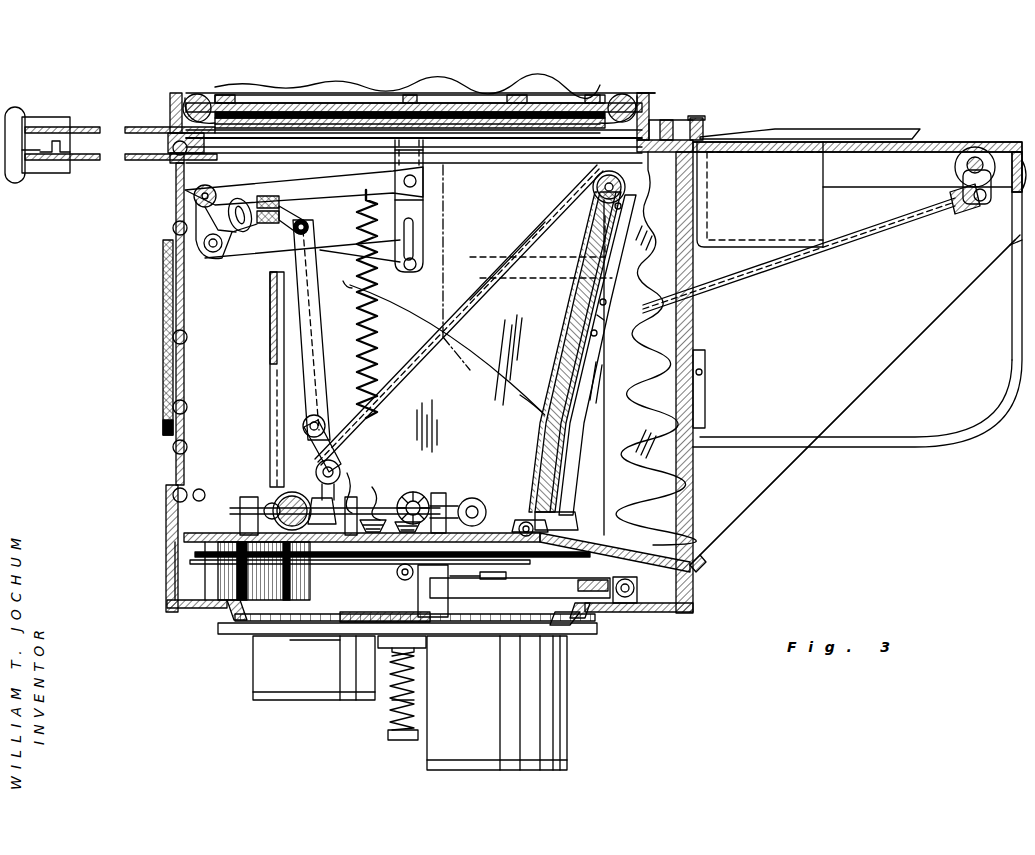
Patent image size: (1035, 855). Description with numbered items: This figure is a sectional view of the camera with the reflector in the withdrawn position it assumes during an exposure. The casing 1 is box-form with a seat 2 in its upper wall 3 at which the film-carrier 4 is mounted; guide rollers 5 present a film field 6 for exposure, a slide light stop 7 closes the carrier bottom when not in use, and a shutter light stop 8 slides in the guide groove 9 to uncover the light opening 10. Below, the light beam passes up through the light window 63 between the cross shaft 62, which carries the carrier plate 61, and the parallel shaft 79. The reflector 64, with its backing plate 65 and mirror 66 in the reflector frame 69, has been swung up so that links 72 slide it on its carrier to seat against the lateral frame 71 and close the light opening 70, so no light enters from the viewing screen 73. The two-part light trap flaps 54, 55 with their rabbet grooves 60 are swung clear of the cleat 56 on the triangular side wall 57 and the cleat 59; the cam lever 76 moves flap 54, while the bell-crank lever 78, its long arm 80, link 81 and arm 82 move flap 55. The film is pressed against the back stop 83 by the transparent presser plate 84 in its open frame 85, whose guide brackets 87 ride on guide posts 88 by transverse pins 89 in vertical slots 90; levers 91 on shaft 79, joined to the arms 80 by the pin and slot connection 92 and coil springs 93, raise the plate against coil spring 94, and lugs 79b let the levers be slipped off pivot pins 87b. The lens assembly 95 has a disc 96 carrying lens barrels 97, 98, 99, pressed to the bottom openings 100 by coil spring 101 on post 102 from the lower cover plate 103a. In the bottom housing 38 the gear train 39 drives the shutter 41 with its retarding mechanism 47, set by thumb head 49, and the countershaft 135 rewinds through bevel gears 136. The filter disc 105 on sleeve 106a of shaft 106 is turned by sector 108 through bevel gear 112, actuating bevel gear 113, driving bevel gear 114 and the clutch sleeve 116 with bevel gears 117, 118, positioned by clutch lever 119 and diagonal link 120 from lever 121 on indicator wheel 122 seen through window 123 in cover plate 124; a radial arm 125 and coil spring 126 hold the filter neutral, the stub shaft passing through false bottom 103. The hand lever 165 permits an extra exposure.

The casing 1 is at (175, 178).
The seat 2 is at (495, 153).
The upper wall 3 is at (672, 112).
The film-carrier 4 is at (652, 95).
The guide rollers 5 is at (198, 94).
The film field 6 is at (292, 118).
The slide light stop 7 is at (142, 125).
The shutter light stop 8 is at (128, 162).
The guide groove 9 is at (338, 192).
The light opening 10 is at (196, 194).
The bottom housing 38 is at (166, 576).
The gear train 39 is at (520, 520).
The shutter 41 is at (330, 567).
The retarding mechanism 47 is at (562, 597).
The thumb head 49 is at (705, 124).
The flap 54 is at (574, 308).
The flap 55 is at (275, 378).
The cleat 56 is at (536, 246).
The side wall 57 is at (438, 430).
The cleat 59 is at (412, 398).
The rabbet grooves 60 is at (352, 286).
The carrier plate 61 is at (540, 438).
The cross shaft 62 is at (628, 186).
The light window 63 is at (478, 165).
The reflector 64 is at (597, 332).
The backing plate 65 is at (604, 302).
The mirror 66 is at (602, 318).
The reflector frame 69 is at (622, 206).
The light opening 70 is at (572, 425).
The lateral frame 71 is at (626, 199).
The link 72 is at (585, 365).
The viewing screen 73 is at (676, 450).
The cam lever 76 is at (640, 236).
The lever 78 is at (224, 262).
The shaft 79 is at (228, 213).
The lugs 79b is at (200, 236).
The long arm 80 is at (292, 236).
The link 81 is at (320, 346).
The arm 82 is at (322, 472).
The back stop 83 is at (382, 100).
The presser plate 84 is at (500, 105).
The open frame 85 is at (590, 122).
The guide brackets 87 is at (420, 212).
The pivot pins 87b is at (421, 180).
The guide posts 88 is at (422, 196).
The transverse pins 89 is at (410, 272).
The vertical slots 90 is at (416, 230).
The levers 91 is at (343, 214).
The pin and slot connection 92 is at (215, 254).
The coil springs 93 is at (284, 212).
The coil spring 94 is at (380, 340).
The lens assembly 95 is at (288, 642).
The disc 96 is at (580, 622).
The lens barrel 97 is at (392, 702).
The lens barrel 98 is at (312, 680).
The lens barrel 99 is at (542, 722).
The bottom openings 100 is at (220, 634).
The coil spring 101 is at (390, 738).
The post 102 is at (392, 720).
The false bottom 103 is at (200, 534).
The lower cover plate 103a is at (205, 608).
The filter disc 105 is at (210, 562).
The shaft 106 is at (414, 596).
The sleeve 106a is at (440, 622).
The sector 108 is at (328, 560).
The bevel gear 112 is at (390, 512).
The actuating bevel gear 113 is at (368, 510).
The driving bevel gear 114 is at (322, 500).
The clutch sleeve 116 is at (274, 502).
The bevel gear 117 is at (246, 521).
The bevel gear 118 is at (298, 497).
The clutch lever 119 is at (292, 492).
The diagonal link 120 is at (770, 268).
The lever 121 is at (962, 178).
The indicator wheel 122 is at (956, 160).
The window 123 is at (993, 141).
The cover plate 124 is at (938, 141).
The radial arm 125 is at (450, 579).
The coil spring 126 is at (402, 576).
The countershaft 135 is at (462, 500).
The bevel gears 136 is at (414, 498).
The hand lever 165 is at (858, 135).